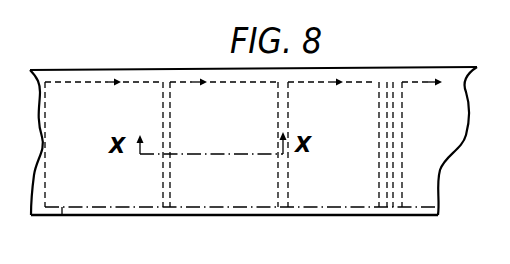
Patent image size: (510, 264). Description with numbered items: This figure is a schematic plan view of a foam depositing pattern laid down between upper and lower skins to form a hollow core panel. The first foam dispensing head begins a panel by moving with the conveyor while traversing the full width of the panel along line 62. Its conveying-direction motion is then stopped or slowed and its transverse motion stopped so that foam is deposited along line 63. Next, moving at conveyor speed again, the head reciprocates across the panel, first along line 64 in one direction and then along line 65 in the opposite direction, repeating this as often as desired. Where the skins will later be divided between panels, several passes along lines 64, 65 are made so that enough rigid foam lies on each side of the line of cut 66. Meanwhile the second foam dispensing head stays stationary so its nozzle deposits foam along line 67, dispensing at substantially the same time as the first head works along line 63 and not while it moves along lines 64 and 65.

The line 62 is at (47, 180).
The line 63 is at (78, 84).
The line 64 is at (161, 117).
The line 65 is at (172, 128).
The line of cut 66 is at (385, 218).
The line 67 is at (56, 220).